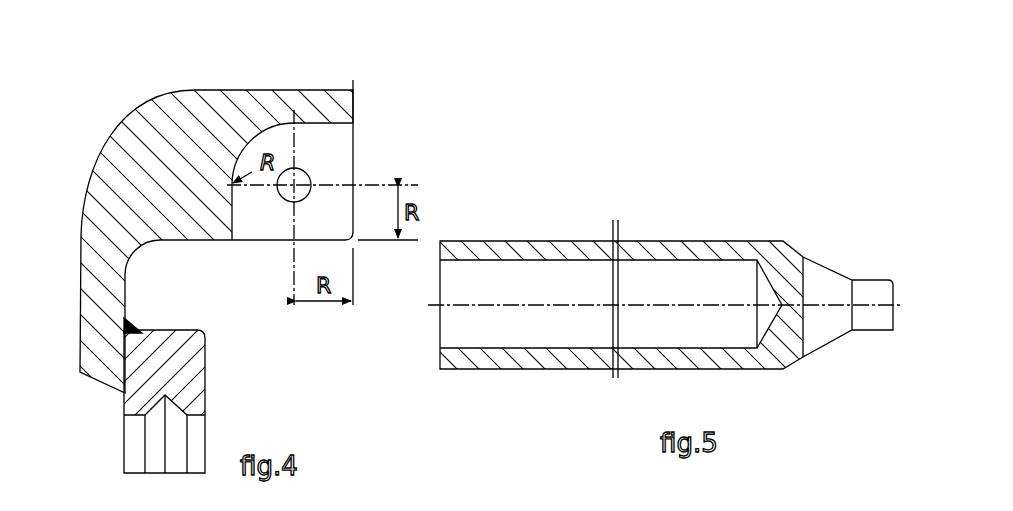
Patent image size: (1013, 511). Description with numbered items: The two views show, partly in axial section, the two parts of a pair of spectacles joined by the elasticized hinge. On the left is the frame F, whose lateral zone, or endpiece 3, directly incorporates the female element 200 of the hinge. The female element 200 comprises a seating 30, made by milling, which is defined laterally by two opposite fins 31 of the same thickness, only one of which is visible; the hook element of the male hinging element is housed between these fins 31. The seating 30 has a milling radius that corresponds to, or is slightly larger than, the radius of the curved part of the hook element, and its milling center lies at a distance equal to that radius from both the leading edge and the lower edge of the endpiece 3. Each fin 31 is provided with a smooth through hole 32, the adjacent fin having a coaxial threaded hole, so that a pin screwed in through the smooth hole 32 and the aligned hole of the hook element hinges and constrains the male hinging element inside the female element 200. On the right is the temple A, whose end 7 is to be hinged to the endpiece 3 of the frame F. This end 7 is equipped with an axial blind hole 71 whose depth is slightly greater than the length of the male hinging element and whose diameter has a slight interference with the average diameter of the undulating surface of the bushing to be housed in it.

In FIG. 4, the endpiece 3 is at (117, 175).
In FIG. 4, the seating 30 is at (322, 130).
In FIG. 4, the fins 31 is at (265, 217).
In FIG. 4, the smooth through hole 32 is at (302, 178).
In FIG. 4, the female element 200 is at (424, 120).
In FIG. 4, the frame F is at (198, 397).
In FIG. 5, the end 7 is at (542, 250).
In FIG. 5, the axial blind hole 71 is at (548, 352).
In FIG. 5, the temple A is at (875, 290).